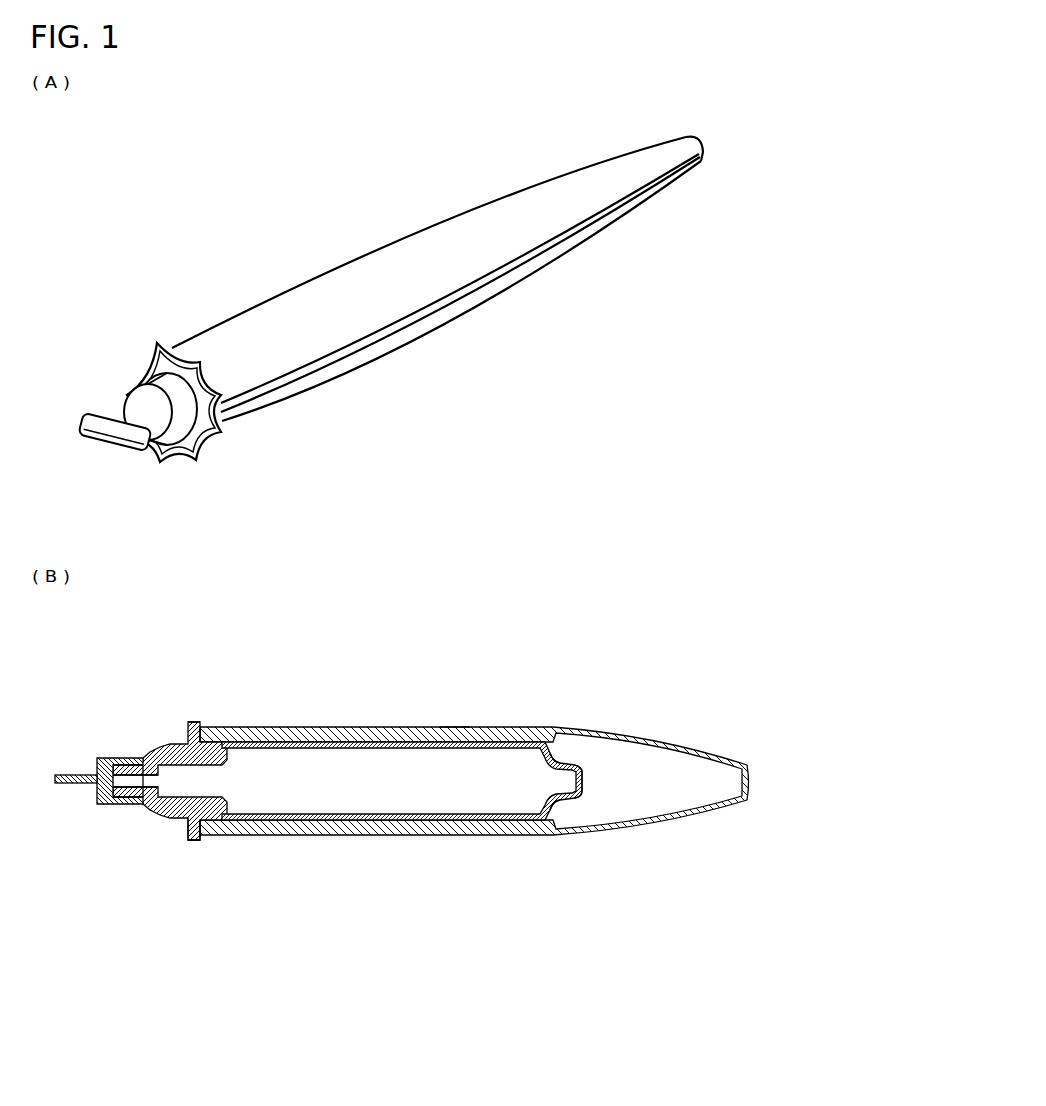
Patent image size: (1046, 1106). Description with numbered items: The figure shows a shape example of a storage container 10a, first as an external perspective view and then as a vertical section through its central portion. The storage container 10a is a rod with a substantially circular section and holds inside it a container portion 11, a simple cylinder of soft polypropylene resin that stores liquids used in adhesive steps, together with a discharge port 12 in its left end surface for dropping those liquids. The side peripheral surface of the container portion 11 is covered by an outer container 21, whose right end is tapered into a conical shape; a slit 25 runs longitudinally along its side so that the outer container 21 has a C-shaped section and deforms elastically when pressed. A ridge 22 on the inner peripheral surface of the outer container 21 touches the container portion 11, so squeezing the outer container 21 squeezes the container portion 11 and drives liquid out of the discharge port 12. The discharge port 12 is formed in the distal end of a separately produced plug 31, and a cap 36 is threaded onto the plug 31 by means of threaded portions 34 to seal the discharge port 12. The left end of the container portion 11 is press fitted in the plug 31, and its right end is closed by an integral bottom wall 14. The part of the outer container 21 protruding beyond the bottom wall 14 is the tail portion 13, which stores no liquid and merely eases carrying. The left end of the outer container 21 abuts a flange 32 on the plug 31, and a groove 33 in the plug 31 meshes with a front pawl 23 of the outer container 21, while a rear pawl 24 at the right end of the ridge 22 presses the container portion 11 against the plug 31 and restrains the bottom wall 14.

The storage container 10a is at (431, 346).
The container portion 11 is at (314, 744).
The discharge port 12 is at (111, 805).
The tail portion 13 is at (612, 172).
The bottom wall 14 is at (588, 782).
The outer container 21 is at (353, 245).
The ridge 22 is at (455, 727).
The front pawl 23 is at (207, 730).
The rear pawl 24 is at (577, 742).
The slit 25 is at (313, 367).
The plug 31 is at (212, 455).
The flange 32 is at (196, 838).
The groove 33 is at (194, 781).
The threaded portion 34 is at (134, 799).
The cap 36 is at (140, 400).